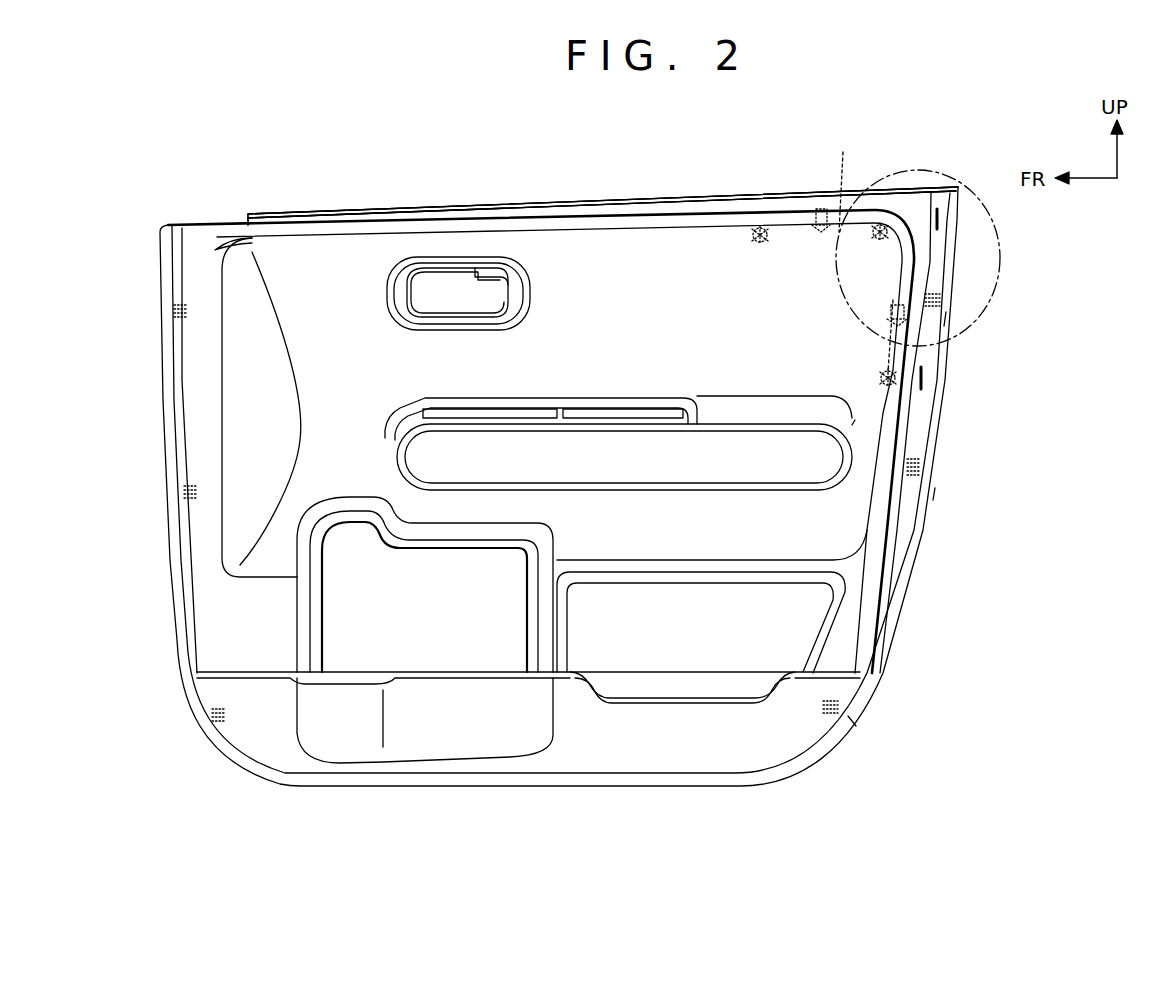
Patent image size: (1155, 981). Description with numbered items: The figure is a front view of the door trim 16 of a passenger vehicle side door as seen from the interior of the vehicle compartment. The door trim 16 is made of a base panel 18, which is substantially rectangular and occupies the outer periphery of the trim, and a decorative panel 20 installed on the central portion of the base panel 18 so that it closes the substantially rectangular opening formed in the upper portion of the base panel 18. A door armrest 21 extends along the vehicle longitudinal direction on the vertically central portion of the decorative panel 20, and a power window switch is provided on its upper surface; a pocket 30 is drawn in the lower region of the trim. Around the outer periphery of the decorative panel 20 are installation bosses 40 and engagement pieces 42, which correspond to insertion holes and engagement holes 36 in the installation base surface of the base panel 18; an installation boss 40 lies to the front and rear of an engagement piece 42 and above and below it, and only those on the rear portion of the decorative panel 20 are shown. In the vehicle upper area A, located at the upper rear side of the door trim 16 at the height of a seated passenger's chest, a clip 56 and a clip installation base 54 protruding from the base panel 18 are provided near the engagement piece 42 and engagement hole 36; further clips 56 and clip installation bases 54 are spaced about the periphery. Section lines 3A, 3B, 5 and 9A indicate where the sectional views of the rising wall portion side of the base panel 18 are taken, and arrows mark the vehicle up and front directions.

The door trim 16 is at (558, 139).
The decorative panel 20 is at (488, 222).
The base panel 18 is at (546, 213).
The door armrest 21 is at (688, 462).
The door pocket 30 is at (704, 690).
The engagement hole 36 is at (821, 208).
The installation boss 40 is at (758, 226).
The engagement piece 42 is at (866, 338).
The clip installation base 54 is at (942, 300).
The clip 56 is at (948, 319).
The vehicle upper area A is at (938, 176).
The section line 9A is at (942, 218).
The section line 3A is at (809, 248).
The section line 3B is at (823, 307).
The section line 5 is at (736, 297).